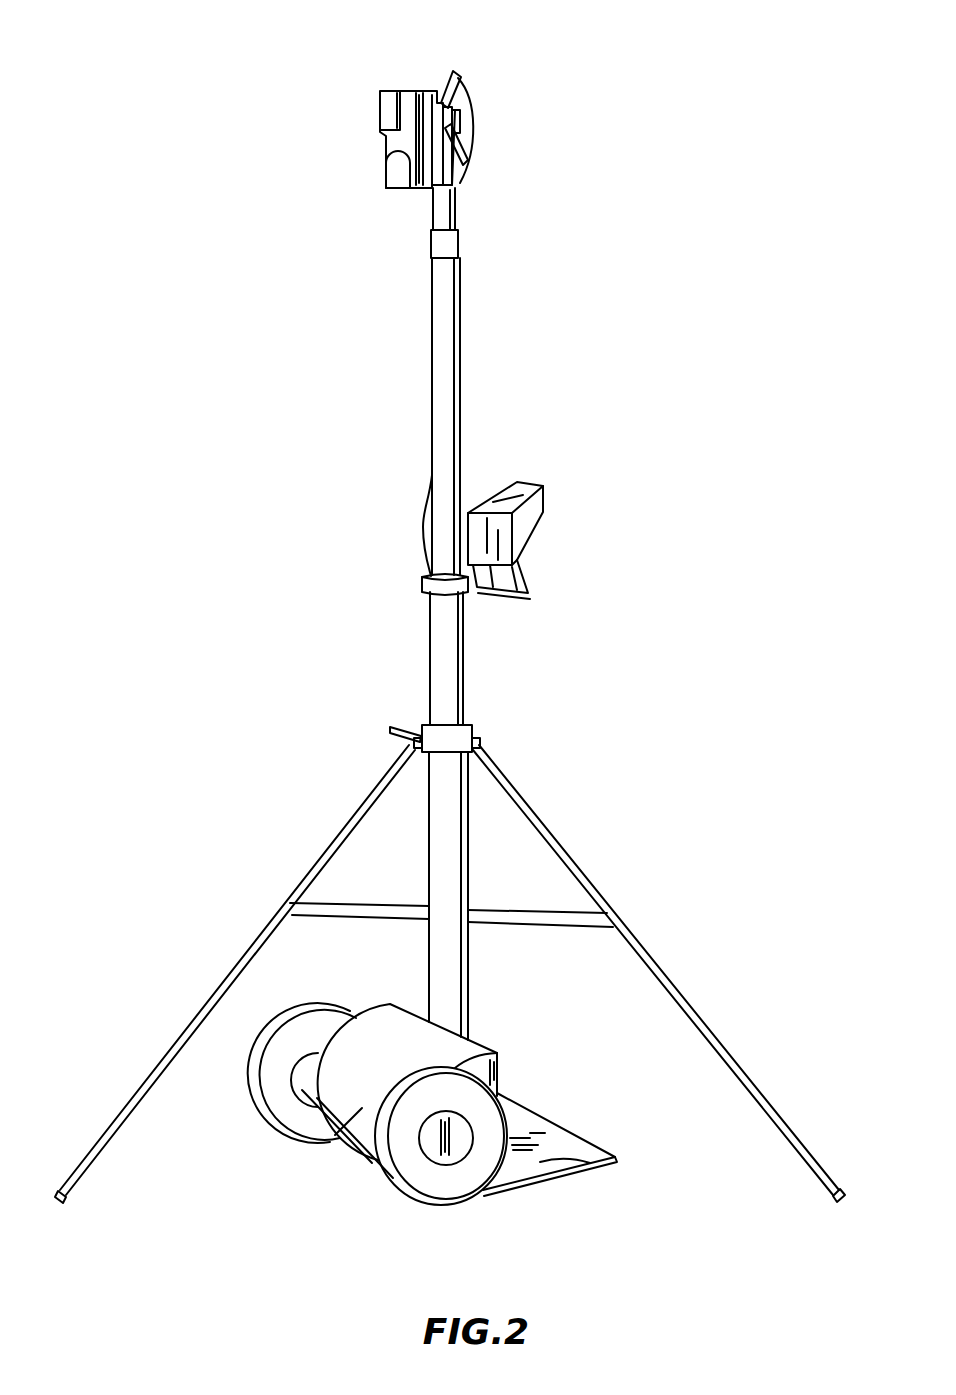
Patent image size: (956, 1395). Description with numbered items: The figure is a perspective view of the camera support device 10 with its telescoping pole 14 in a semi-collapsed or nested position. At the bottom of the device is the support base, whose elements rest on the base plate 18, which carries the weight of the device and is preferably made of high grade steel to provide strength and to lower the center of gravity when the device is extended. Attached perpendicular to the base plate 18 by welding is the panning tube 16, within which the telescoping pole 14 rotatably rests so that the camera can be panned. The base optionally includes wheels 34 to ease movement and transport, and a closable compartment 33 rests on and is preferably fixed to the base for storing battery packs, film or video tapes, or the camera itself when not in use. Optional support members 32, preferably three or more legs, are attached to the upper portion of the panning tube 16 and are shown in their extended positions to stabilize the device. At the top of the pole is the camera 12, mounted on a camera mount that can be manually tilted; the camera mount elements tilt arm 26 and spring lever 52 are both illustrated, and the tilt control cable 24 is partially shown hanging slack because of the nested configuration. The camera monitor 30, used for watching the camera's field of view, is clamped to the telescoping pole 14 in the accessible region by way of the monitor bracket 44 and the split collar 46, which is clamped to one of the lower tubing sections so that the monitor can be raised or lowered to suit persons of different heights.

The camera support device 10 is at (658, 555).
The camera 12 is at (376, 113).
The telescoping pole 14 is at (444, 315).
The panning tube 16 is at (470, 849).
The base plate 18 is at (594, 1163).
The tilt control cable 24 is at (421, 537).
The tilt arm 26 is at (464, 77).
The camera monitor 30 is at (533, 482).
The support members 32 is at (140, 1092).
The closable compartment 33 is at (340, 1142).
The wheels 34 is at (393, 1177).
The monitor bracket 44 is at (507, 590).
The split collar 46 is at (440, 596).
The spring lever 52 is at (473, 150).